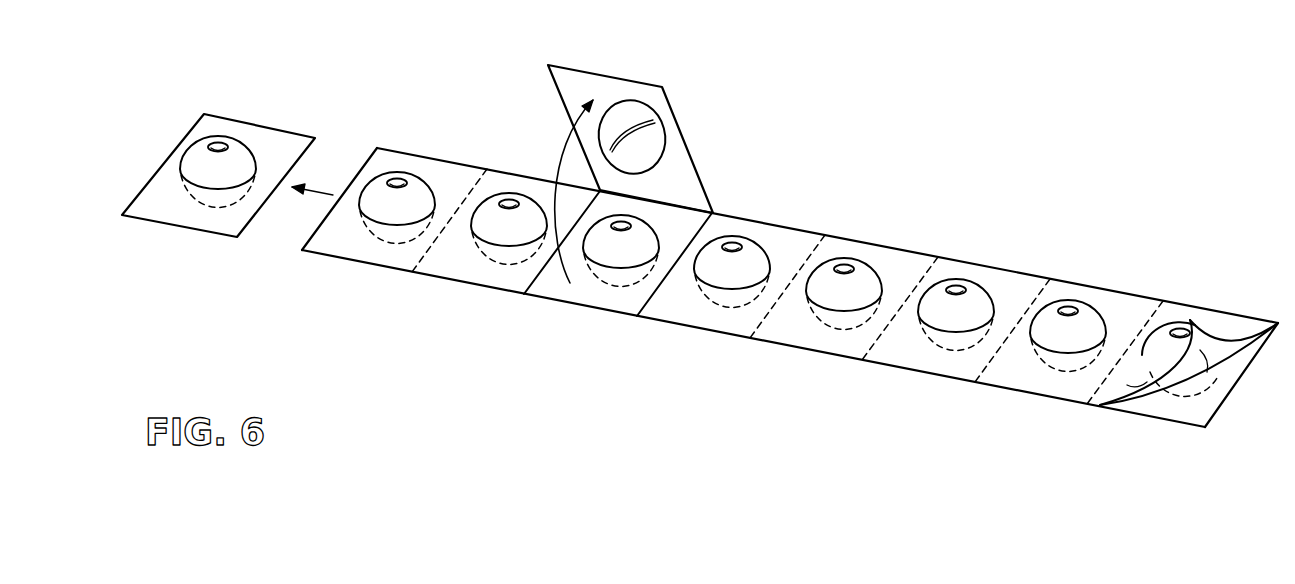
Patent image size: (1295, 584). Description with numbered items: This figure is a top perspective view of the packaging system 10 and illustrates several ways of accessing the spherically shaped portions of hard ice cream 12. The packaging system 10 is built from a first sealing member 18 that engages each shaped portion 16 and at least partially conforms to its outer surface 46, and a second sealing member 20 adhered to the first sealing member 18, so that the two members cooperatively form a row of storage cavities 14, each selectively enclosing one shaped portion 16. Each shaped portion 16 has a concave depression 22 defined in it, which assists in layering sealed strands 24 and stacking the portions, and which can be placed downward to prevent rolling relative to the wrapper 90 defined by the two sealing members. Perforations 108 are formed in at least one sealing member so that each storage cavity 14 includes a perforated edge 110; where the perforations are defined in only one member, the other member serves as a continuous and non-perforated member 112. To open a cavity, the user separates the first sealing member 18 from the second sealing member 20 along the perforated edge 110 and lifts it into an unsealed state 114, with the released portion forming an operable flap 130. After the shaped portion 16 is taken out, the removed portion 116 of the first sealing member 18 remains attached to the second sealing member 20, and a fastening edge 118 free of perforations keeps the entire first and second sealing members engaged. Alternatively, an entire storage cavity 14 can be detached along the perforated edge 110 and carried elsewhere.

The packaging system 10 is at (932, 213).
The hard ice cream 12 is at (627, 255).
The storage cavity 14 is at (982, 278).
The shaped portion 16 is at (873, 263).
The first sealing member 18 is at (785, 248).
The second sealing member 20 is at (1167, 405).
The concave depression 22 is at (620, 225).
The sealed strand 24 is at (1217, 300).
The outer surface 46 is at (610, 268).
The wrapper 90 is at (1125, 290).
The perforations 108 is at (1000, 357).
The perforated edge 110 is at (360, 162).
The continuous and non-perforated member 112 is at (670, 237).
The unsealed state 114 is at (615, 75).
The removed portion 116 is at (237, 117).
The fastening edge 118 is at (818, 230).
The operable flap 130 is at (1220, 360).